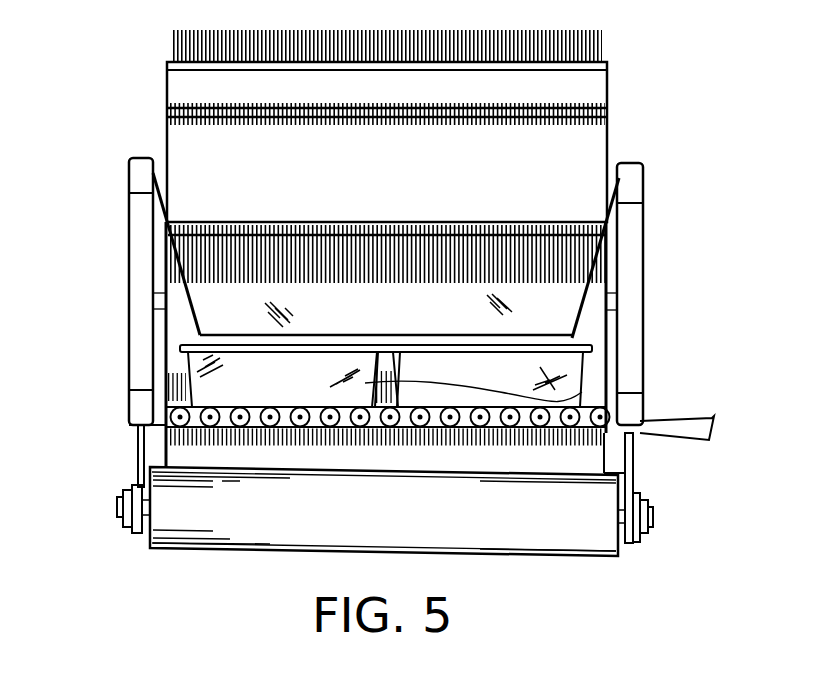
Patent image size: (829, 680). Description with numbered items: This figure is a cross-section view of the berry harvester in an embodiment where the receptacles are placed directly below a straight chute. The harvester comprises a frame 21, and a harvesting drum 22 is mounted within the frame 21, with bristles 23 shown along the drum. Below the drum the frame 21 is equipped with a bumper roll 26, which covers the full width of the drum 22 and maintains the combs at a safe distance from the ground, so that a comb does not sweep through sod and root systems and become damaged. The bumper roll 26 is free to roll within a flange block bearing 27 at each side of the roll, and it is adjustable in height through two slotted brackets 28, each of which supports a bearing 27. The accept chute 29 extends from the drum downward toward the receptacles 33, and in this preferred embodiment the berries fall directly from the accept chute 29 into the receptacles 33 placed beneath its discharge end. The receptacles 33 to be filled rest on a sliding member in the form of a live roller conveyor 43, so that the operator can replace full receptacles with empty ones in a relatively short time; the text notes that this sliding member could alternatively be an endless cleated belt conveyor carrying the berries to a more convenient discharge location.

The frame 21 is at (147, 362).
The harvesting drum 22 is at (607, 93).
The bristles 23 is at (607, 45).
The bumper roll 26 is at (190, 550).
The flange block bearing 27 is at (130, 487).
The slotted bracket 28 is at (138, 455).
The accept chute 29 is at (203, 288).
The receptacle 33 is at (582, 392).
The live roller conveyor 43 is at (170, 417).